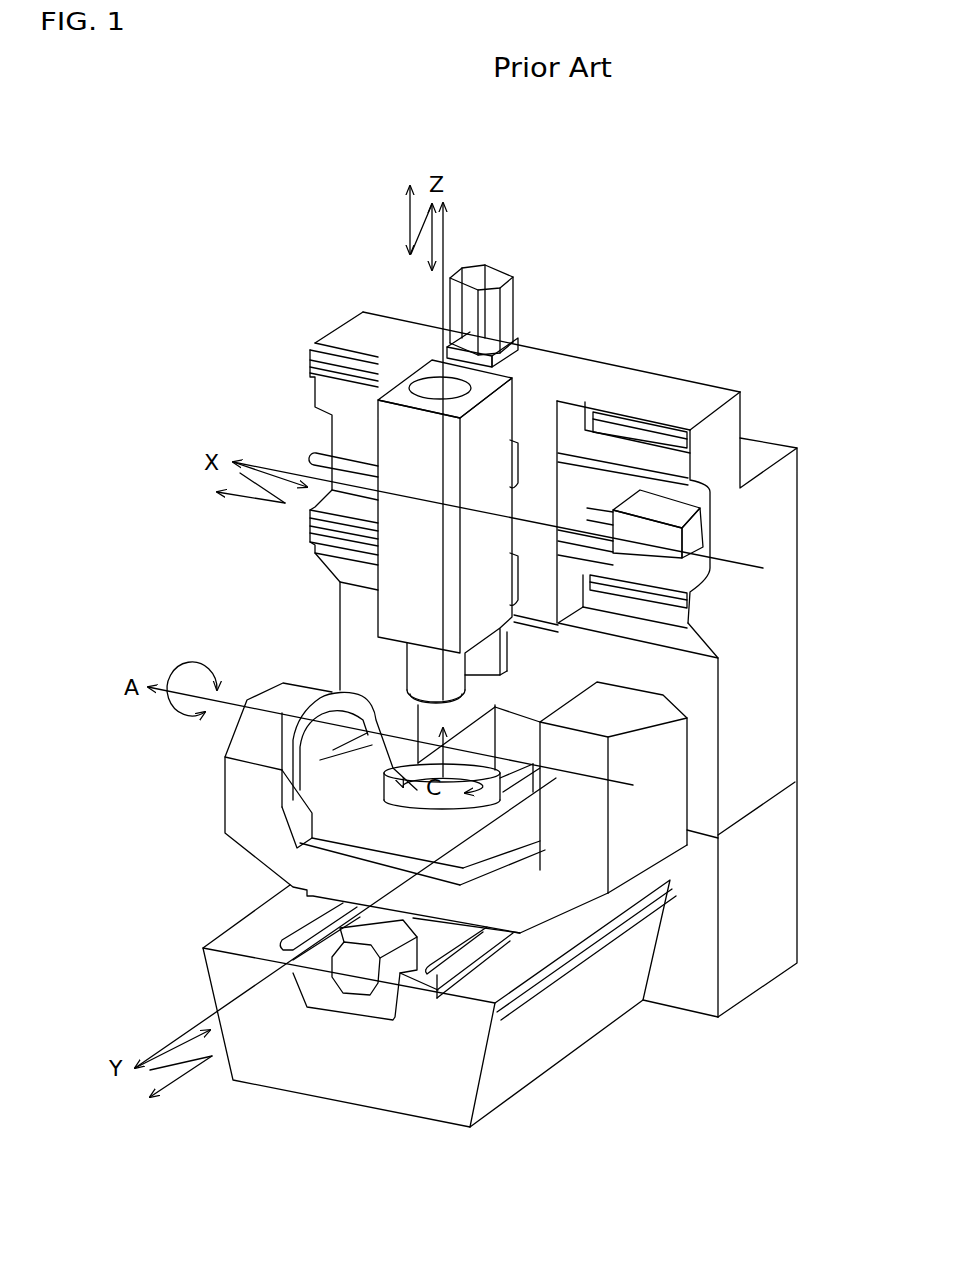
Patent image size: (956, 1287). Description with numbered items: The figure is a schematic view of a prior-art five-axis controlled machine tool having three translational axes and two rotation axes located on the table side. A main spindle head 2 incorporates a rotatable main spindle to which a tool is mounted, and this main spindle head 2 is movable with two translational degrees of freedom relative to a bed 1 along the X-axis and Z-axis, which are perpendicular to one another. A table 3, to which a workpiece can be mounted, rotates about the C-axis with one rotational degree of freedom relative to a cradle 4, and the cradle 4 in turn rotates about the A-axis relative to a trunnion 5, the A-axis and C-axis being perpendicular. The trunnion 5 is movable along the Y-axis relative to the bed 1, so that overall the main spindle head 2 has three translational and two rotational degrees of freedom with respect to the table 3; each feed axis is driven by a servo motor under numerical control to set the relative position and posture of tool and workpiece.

The bed 1 is at (563, 1020).
The main spindle head 2 is at (405, 644).
The table 3 is at (410, 812).
The cradle 4 is at (355, 757).
The trunnion 5 is at (635, 842).